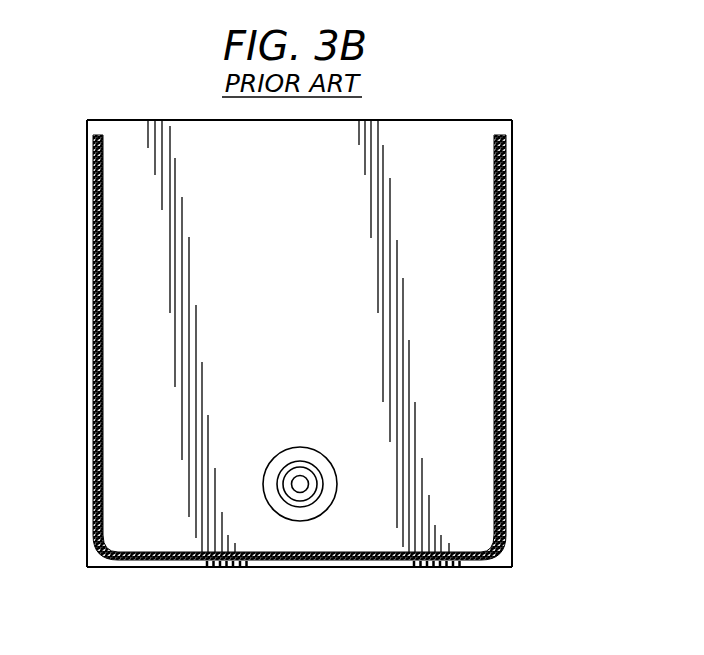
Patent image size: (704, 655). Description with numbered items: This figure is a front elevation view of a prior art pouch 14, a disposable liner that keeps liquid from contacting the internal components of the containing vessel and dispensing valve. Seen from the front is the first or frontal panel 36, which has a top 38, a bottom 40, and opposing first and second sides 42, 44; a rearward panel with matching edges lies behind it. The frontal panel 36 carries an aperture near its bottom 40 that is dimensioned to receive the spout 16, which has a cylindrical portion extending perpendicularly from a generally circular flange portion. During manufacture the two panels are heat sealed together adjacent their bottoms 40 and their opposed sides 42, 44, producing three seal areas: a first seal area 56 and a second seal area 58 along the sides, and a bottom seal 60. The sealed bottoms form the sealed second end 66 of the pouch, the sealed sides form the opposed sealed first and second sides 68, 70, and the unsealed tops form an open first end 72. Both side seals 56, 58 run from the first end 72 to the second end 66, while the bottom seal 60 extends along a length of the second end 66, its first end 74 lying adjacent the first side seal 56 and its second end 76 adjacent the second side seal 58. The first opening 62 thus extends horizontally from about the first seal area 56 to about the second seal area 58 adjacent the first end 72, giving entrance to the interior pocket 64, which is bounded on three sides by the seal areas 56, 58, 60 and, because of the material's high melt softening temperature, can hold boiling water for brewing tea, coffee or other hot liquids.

The pouch 14 is at (60, 307).
The spout 16 is at (299, 472).
The first panel 36 is at (428, 272).
The top 38 is at (487, 119).
The bottom 40 is at (382, 568).
The first side 42 is at (87, 413).
The second side 44 is at (513, 376).
The first seal area 56 is at (93, 213).
The second seal area 58 is at (498, 205).
The bottom seal 60 is at (182, 561).
The first opening 62 is at (387, 100).
The interior pocket 64 is at (410, 145).
The second end 66 is at (475, 568).
The first side of pouch 68 is at (88, 180).
The second side of pouch 70 is at (513, 415).
The first end 72 is at (173, 119).
The first end of bottom seal 74 is at (128, 553).
The second end of bottom seal 76 is at (439, 453).